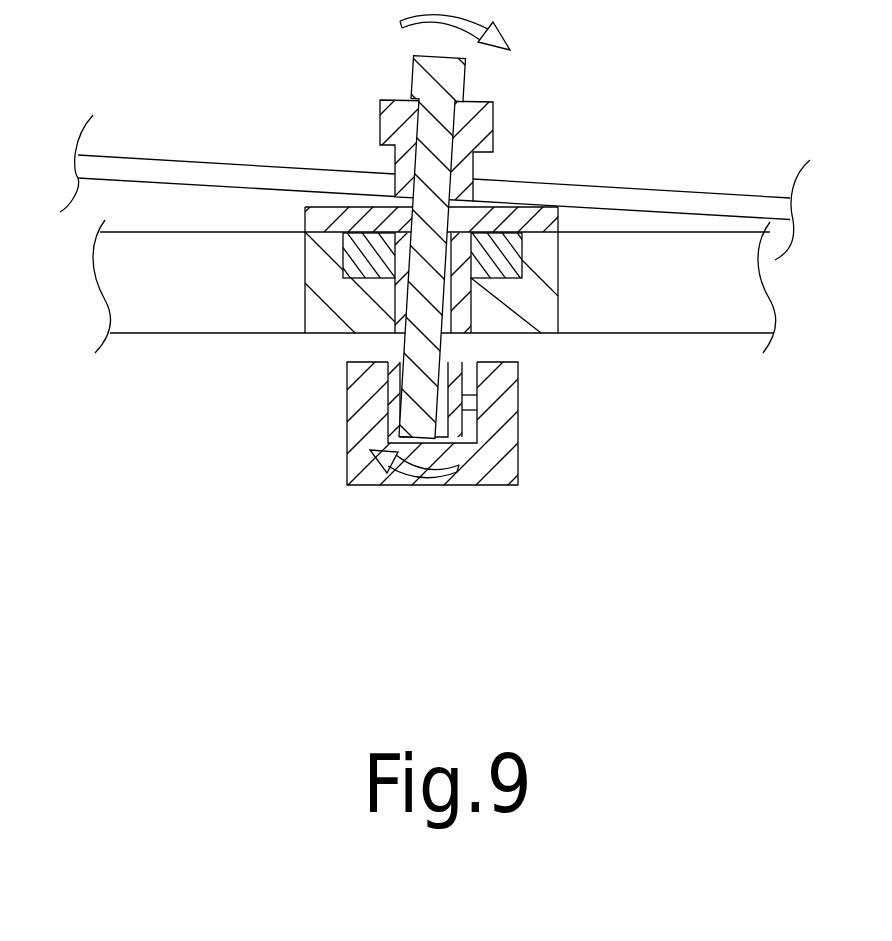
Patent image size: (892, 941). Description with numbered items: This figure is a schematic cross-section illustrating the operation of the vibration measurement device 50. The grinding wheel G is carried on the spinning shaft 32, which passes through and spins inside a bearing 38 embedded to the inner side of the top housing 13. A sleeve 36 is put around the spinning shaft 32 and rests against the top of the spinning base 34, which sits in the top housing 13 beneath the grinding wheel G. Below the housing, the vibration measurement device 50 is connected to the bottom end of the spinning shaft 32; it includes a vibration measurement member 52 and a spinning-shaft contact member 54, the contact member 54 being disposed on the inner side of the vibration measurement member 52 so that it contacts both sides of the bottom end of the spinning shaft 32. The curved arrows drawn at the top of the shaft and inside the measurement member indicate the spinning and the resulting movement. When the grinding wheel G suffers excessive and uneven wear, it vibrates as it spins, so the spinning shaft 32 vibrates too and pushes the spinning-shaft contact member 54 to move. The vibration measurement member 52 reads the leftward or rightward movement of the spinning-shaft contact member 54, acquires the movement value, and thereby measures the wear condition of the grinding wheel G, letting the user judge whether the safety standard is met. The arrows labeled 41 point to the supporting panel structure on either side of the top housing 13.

The top housing 13 is at (547, 334).
The spinning shaft 32 is at (413, 78).
The spinning base 34 is at (305, 217).
The sleeve 36 is at (380, 117).
The bearing 38 is at (343, 243).
The panel 41 is at (190, 315).
The vibration measurement device 50 is at (445, 467).
The vibration measurement member 52 is at (463, 485).
The spinning-shaft contact member 54 is at (392, 377).
The grinding wheel G is at (631, 186).